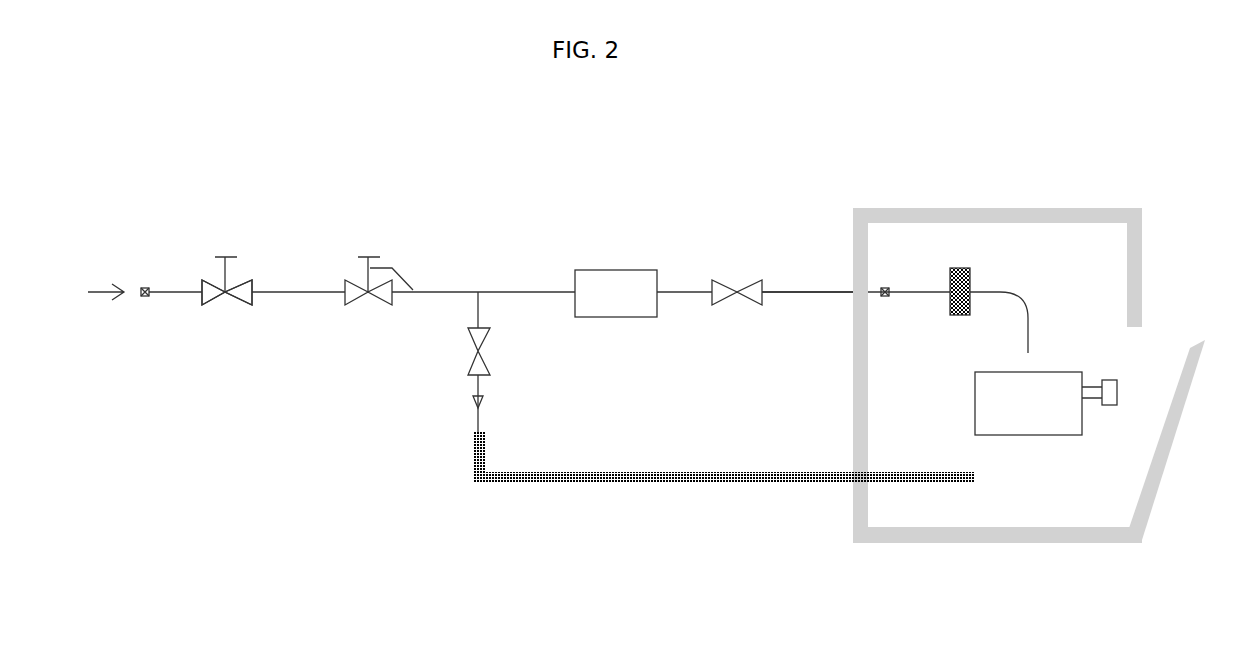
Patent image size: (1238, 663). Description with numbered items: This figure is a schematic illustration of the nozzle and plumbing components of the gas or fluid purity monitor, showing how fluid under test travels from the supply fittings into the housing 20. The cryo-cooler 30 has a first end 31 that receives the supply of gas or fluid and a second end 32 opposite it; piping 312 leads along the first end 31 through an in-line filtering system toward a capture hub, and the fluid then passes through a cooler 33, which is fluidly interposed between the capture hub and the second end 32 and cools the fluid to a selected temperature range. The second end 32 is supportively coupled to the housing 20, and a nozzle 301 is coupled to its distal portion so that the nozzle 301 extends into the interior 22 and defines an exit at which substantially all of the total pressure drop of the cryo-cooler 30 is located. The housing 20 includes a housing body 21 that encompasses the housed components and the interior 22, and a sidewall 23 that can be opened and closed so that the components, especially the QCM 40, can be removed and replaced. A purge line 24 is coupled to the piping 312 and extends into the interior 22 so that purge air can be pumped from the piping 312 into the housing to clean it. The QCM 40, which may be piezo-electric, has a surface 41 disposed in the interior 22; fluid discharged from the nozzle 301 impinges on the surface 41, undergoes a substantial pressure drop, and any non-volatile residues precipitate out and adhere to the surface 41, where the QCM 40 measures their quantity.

The housing 20 is at (848, 218).
The housing body 21 is at (1137, 272).
The interior 22 is at (997, 493).
The sidewall 23 is at (1147, 472).
The purge line 24 is at (678, 480).
The cryo-cooler 30 is at (530, 288).
The first end 31 is at (302, 292).
The second end 32 is at (835, 293).
The cooler 33 is at (628, 282).
The nozzle 301 is at (1030, 318).
The piping 312 is at (495, 292).
The QCM 40 is at (1030, 377).
The surface 41 is at (1000, 373).